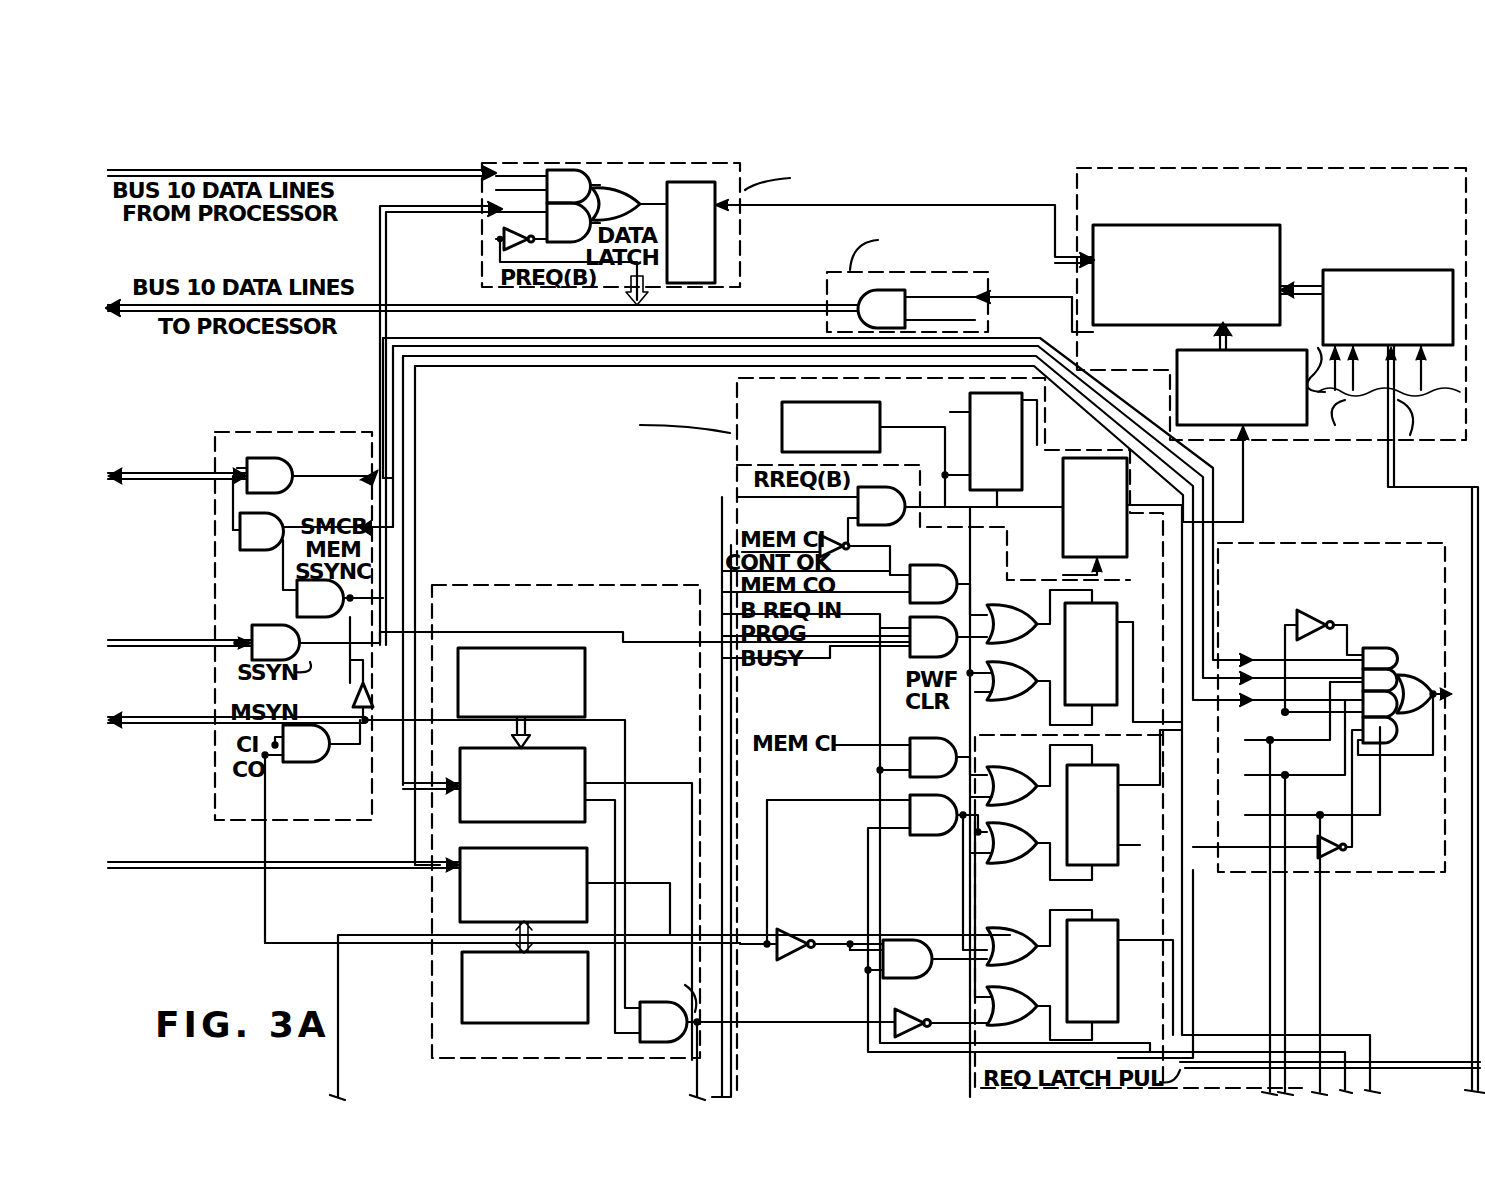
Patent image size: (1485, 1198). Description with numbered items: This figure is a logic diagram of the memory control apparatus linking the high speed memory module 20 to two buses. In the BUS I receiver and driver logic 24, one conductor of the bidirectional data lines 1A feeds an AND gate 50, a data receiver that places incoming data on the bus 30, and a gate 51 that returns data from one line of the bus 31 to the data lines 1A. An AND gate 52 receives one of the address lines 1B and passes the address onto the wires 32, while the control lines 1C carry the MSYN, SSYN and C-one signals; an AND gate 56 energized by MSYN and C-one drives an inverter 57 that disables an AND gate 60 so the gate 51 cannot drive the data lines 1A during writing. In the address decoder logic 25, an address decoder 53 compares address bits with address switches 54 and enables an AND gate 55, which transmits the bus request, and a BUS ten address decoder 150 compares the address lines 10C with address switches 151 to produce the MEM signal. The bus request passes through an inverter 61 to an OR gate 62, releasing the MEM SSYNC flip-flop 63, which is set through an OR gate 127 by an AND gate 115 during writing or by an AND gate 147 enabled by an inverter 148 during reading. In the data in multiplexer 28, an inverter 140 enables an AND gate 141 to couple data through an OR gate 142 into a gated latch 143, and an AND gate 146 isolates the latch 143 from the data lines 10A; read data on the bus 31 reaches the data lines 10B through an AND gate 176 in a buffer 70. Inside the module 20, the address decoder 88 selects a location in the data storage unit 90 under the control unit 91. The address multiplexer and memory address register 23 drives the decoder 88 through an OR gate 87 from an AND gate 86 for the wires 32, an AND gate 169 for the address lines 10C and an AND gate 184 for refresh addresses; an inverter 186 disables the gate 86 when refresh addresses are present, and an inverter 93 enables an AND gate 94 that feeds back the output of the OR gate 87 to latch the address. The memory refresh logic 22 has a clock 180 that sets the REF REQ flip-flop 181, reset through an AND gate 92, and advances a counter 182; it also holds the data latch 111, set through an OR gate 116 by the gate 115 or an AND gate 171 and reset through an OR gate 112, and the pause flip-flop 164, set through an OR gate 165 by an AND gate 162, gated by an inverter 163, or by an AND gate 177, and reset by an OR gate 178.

The data lines 10A is at (388, 178).
The data lines 10B is at (362, 300).
The address lines 10C is at (245, 875).
The bidirectional data lines 1A is at (190, 455).
The address lines 1B is at (190, 650).
The control lines 1C is at (210, 712).
The receiver and driver logic 24 is at (340, 430).
The AND gate 50 is at (312, 475).
The AND gate 51 is at (313, 531).
The bus 30 is at (372, 490).
The bus 31 is at (1010, 332).
The wires 32 is at (1230, 495).
The AND gate 60 is at (333, 611).
The AND gate 52 is at (581, 642).
The inverter 57 is at (352, 697).
The AND gate 56 is at (501, 864).
The address decoder logic 25 is at (640, 585).
The address switches 54 is at (585, 688).
The address decoder 53 is at (590, 760).
The BUS 10 address decoder 150 is at (590, 860).
The address switches 151 is at (525, 992).
The AND gate 55 is at (664, 1030).
The data in multiplexer 28 is at (742, 235).
The AND gate 146 is at (545, 186).
The AND gate 141 is at (544, 222).
The OR gate 142 is at (628, 204).
The inverter 140 is at (497, 236).
The gated latch 143 is at (691, 232).
The buffer 70 is at (825, 270).
The AND gate 176 is at (917, 310).
The high speed memory module 20 is at (1320, 442).
The data storage unit 90 is at (1187, 278).
The control unit 91 is at (1379, 680).
The address decoder 88 is at (1253, 377).
The address multiplexer and memory address register 23 is at (1300, 540).
The inverter 186 is at (1332, 616).
The AND gate 86 is at (1380, 658).
The AND gate 169 is at (1380, 680).
The AND gate 184 is at (1380, 704).
The AND gate 94 is at (1380, 730).
The OR gate 87 is at (1405, 715).
The inverter 93 is at (1340, 842).
The memory refresh logic 22 is at (816, 734).
The clock 180 is at (876, 454).
The REF REQ flip-flop 181 is at (1022, 480).
The counter 182 is at (1105, 570).
The AND gate 92 is at (900, 792).
The inverter 163 is at (828, 532).
The AND gate 162 is at (948, 590).
The AND gate 177 is at (948, 637).
The OR gate 165 is at (1039, 616).
The OR gate 178 is at (1029, 693).
The pause flip-flop 164 is at (1123, 662).
The AND gate 171 is at (911, 757).
The AND gate 115 is at (958, 923).
The OR gate 116 is at (1031, 775).
The OR gate 112 is at (1031, 851).
The data latch 111 is at (1124, 799).
The inverter 148 is at (785, 926).
The AND gate 147 is at (918, 959).
The inverter 61 is at (915, 1012).
The OR gate 127 is at (1039, 937).
The OR gate 62 is at (1033, 927).
The MEM SSYNC flip-flop 63 is at (1206, 980).